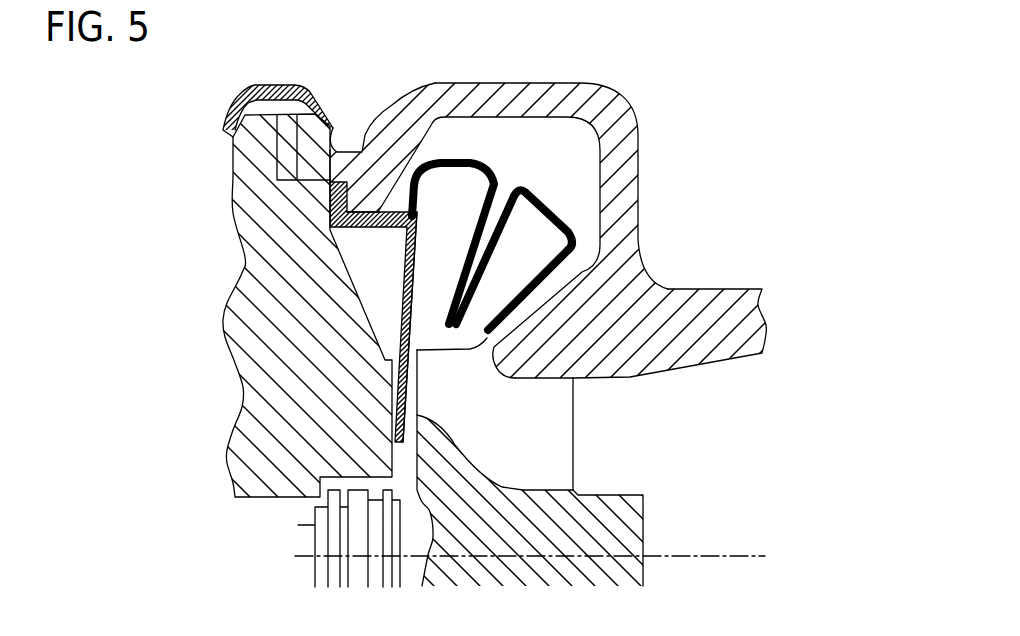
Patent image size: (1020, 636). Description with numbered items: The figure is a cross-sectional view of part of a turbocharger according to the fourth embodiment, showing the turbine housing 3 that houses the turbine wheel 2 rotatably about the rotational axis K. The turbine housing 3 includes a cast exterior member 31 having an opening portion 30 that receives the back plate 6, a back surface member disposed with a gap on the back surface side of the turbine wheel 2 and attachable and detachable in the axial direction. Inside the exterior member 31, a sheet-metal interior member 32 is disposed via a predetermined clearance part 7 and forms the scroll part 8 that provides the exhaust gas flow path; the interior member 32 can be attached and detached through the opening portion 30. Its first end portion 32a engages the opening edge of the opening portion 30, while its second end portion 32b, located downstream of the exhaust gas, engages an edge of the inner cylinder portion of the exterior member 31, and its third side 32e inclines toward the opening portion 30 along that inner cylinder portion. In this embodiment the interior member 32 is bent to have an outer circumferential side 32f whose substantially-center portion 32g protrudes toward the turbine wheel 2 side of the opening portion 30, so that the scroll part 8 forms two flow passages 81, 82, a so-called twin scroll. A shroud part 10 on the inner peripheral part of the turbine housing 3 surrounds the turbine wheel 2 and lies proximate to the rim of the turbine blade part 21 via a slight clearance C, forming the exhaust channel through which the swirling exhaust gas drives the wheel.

The turbine wheel 2 is at (618, 530).
The turbine housing 3 is at (510, 222).
The back plate 6 is at (392, 367).
The clearance part 7 is at (543, 143).
The scroll part 8 is at (567, 222).
The shroud part 10 is at (537, 330).
The turbine blade part 21 is at (515, 437).
The opening portion 30 is at (431, 268).
The exterior member 31 is at (472, 83).
The interior member 32 is at (439, 228).
The first end portion 32a is at (352, 175).
The second end portion 32b is at (475, 352).
The third side 32e is at (520, 287).
The outer circumferential side 32f is at (553, 204).
The substantially-center portion 32g is at (420, 337).
The flow passage 81 is at (458, 197).
The flow passage 82 is at (530, 240).
The clearance C is at (582, 382).
The rotational axis K is at (746, 546).